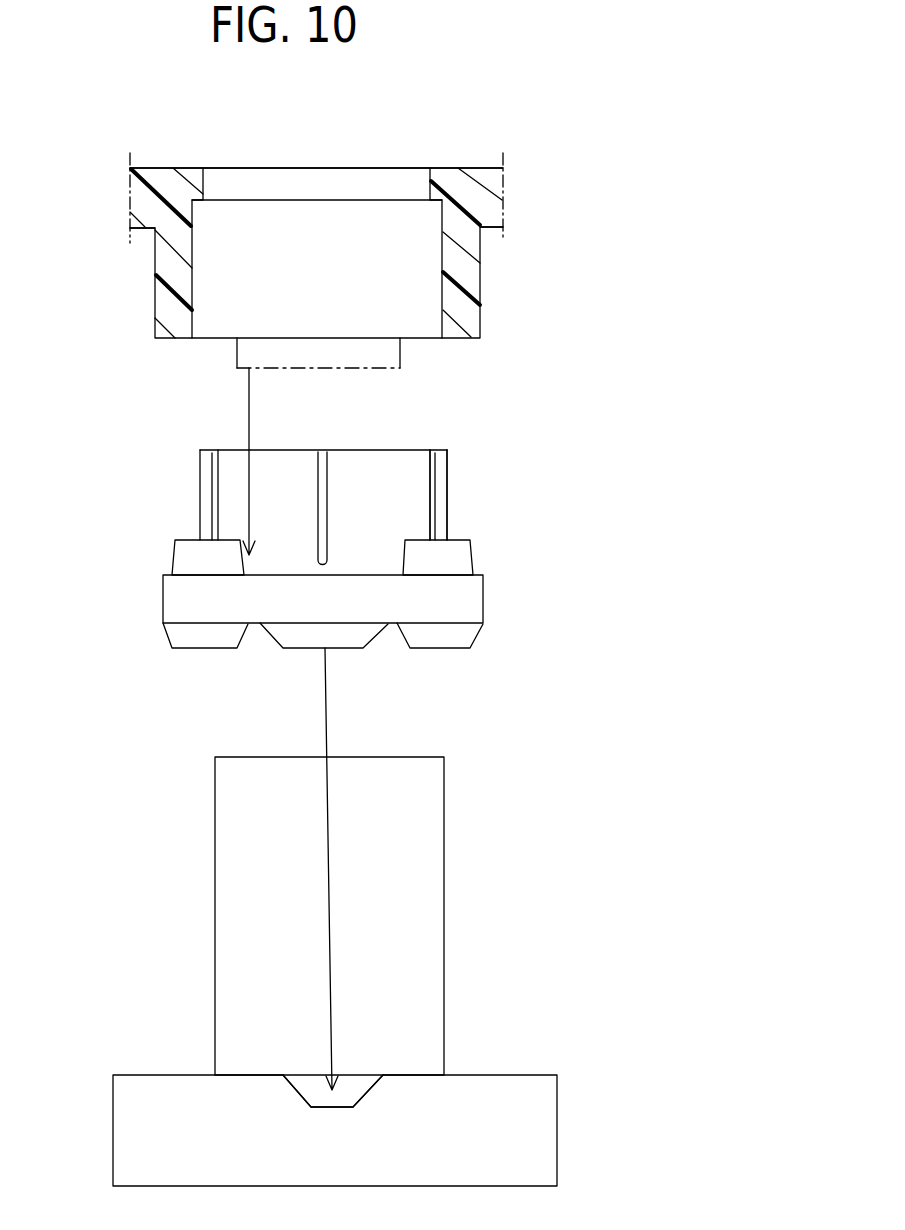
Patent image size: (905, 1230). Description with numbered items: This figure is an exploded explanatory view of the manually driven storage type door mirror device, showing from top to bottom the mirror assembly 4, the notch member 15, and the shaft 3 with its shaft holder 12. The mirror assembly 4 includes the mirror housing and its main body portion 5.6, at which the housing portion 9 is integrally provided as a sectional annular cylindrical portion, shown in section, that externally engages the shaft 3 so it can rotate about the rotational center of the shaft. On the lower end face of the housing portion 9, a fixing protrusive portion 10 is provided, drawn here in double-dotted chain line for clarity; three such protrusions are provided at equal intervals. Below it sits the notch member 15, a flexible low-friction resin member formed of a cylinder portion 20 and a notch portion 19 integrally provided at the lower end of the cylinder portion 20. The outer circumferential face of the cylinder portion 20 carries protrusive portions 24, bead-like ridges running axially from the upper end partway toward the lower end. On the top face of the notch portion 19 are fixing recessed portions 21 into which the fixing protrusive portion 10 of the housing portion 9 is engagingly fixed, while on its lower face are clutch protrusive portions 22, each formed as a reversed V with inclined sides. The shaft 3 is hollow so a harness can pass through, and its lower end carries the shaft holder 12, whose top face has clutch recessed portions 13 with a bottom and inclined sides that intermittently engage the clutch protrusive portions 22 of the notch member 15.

The mirror assembly 4 is at (150, 158).
The mirror housing and main body portion 5.6 is at (480, 170).
The housing portion 9 is at (473, 280).
The fixing protrusive portion 10 is at (400, 355).
The notch member 15 is at (160, 478).
The protrusive portion 24 is at (328, 497).
The cylinder portion 20 is at (448, 462).
The fixing recessed portion 21 is at (380, 573).
The notch portion 19 is at (485, 603).
The clutch protrusive portion 22 is at (183, 638).
The shaft 3 is at (196, 780).
The clutch recessed portion 13 is at (371, 1080).
The shaft holder 12 is at (133, 1073).